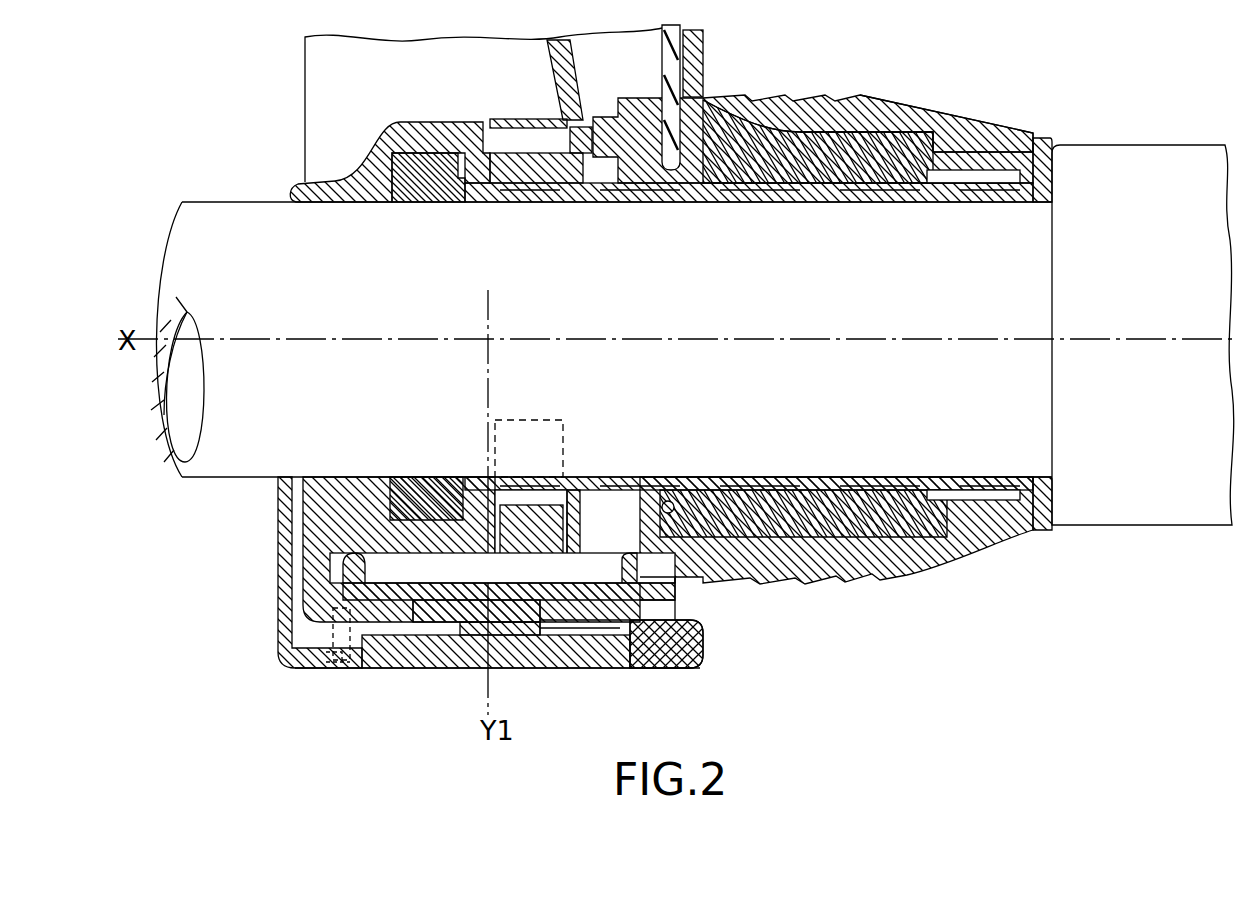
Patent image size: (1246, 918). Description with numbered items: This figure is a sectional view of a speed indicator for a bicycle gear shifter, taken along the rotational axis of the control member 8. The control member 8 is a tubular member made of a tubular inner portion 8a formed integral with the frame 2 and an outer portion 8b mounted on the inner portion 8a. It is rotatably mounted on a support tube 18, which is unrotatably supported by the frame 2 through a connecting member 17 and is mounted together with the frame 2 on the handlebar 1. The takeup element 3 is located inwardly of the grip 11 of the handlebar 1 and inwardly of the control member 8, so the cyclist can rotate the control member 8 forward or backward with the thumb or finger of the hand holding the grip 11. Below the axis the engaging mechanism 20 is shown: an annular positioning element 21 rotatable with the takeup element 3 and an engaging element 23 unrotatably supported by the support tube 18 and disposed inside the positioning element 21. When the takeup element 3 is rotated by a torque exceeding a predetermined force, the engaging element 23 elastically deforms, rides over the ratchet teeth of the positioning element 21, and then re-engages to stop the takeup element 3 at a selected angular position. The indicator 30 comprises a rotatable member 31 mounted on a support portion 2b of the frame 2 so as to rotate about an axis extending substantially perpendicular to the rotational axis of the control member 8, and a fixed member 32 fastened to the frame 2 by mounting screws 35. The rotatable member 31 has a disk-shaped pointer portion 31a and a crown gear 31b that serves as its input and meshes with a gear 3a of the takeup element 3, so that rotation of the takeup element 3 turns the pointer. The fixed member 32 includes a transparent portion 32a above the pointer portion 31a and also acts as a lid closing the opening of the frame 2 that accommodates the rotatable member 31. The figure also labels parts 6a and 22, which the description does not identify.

The handlebar 1 is at (188, 210).
The frame 2 is at (303, 103).
The support portion 2b is at (387, 652).
The takeup element 3 is at (718, 152).
The gear 3a is at (655, 490).
The locking pin 6a is at (668, 65).
The control member 8 is at (983, 41).
The tubular inner portion 8a is at (862, 148).
The outer portion 8b is at (949, 118).
The grip 11 is at (1131, 148).
The connecting member 17 is at (415, 187).
The support tube 18 is at (770, 205).
The engaging mechanism 20 is at (625, 378).
The annular positioning element 21 is at (585, 488).
The retaining portion 22 is at (505, 478).
The engaging element 23 is at (533, 505).
The indicator 30 is at (290, 685).
The rotatable member 31 is at (668, 668).
The pointer portion 31a is at (437, 660).
The crown gear 31b is at (672, 590).
The fixed member 32 is at (700, 662).
The transparent portion 32a is at (583, 658).
The mounting screws 35 is at (340, 660).